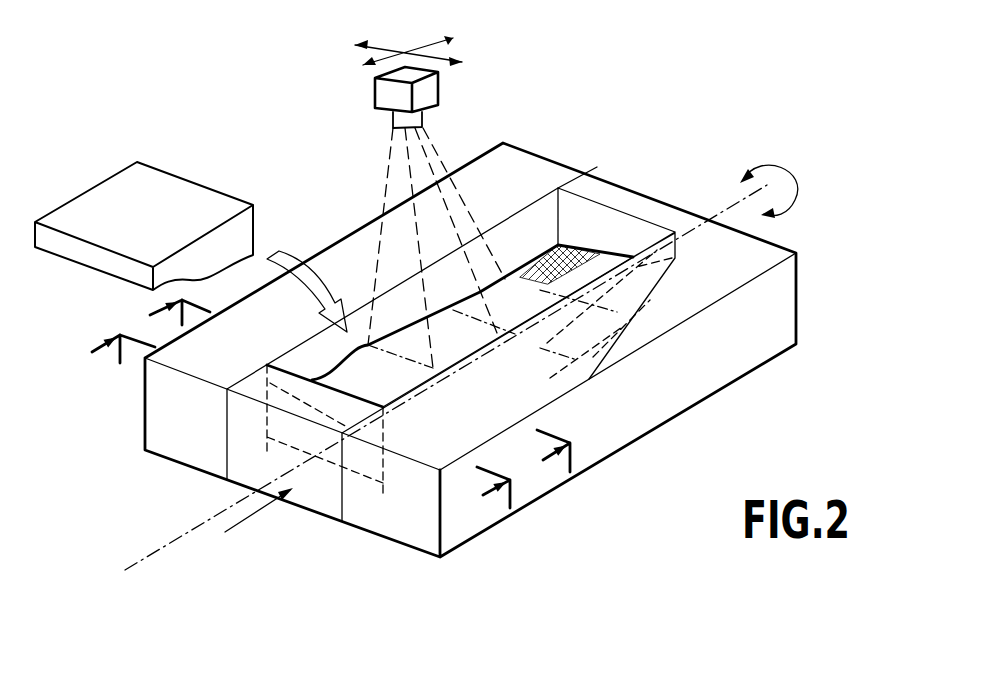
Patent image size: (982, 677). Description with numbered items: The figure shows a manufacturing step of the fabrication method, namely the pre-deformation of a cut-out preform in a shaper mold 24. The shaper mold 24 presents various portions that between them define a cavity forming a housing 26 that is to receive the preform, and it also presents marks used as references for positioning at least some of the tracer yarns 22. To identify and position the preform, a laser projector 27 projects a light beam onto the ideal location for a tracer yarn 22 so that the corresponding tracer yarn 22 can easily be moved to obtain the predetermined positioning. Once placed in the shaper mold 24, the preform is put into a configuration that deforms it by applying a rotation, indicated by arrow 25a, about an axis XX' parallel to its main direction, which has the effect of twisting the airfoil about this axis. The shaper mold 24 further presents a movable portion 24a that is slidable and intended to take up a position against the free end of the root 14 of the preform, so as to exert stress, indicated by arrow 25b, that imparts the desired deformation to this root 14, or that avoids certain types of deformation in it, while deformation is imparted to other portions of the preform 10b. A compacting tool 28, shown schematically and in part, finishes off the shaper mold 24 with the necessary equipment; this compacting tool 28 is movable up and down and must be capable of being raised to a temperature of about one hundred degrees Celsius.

The preform 10b is at (519, 264).
The root 14 is at (364, 480).
The tracer yarn 22 is at (562, 278).
The shaper mold 24 is at (800, 293).
The movable portion 24a is at (243, 435).
The arrow 25a is at (782, 163).
The arrow 25b is at (253, 516).
The housing 26 is at (538, 228).
The laser projector 27 is at (385, 90).
The compacting tool 28 is at (138, 178).